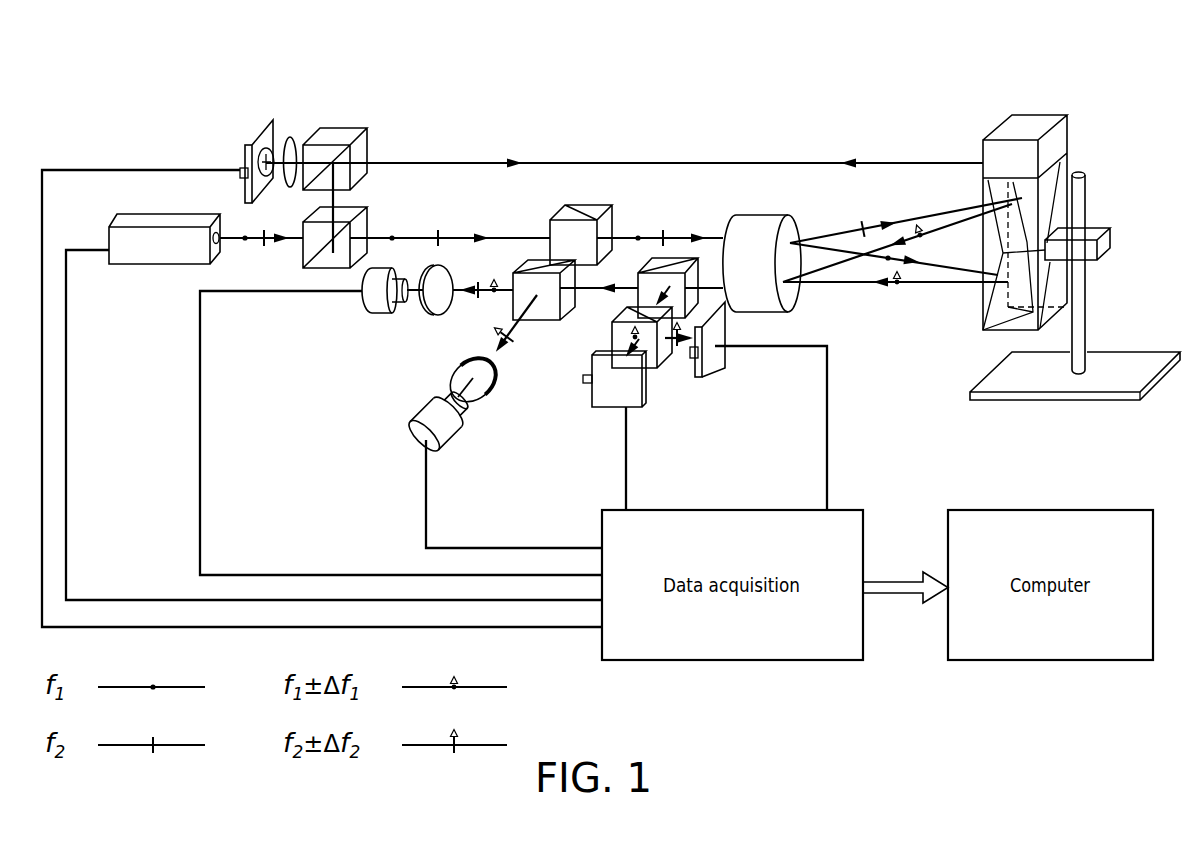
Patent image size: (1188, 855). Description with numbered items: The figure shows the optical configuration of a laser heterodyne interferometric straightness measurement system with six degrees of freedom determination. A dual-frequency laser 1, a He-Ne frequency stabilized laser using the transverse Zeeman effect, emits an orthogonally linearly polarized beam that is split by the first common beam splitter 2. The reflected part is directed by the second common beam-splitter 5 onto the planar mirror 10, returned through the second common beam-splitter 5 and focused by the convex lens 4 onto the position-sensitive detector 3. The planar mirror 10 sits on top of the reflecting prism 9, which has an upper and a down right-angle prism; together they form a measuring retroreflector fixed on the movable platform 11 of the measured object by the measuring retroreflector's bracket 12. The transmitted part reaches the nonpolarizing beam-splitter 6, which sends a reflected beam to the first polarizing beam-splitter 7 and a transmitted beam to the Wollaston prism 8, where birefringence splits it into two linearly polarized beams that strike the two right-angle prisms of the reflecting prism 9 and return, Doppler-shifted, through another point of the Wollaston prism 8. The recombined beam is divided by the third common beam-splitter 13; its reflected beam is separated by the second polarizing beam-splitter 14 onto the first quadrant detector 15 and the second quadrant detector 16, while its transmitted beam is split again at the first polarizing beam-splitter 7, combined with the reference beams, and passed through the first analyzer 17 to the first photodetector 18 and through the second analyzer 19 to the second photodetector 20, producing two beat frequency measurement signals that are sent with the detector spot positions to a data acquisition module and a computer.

The dual-frequency laser 1 is at (163, 252).
The first common beam splitter 2 is at (362, 223).
The position-sensitive detector 3 is at (260, 125).
The convex lens 4 is at (290, 137).
The second common beam-splitter 5 is at (340, 133).
The nonpolarizing beam-splitter 6 is at (592, 207).
The first polarizing beam-splitter 7 is at (532, 263).
The Wollaston prism 8 is at (759, 222).
The reflecting prism 9 is at (1008, 322).
The planar mirror 10 is at (1028, 123).
The movable platform 11 is at (1128, 358).
The measuring retroreflector's bracket 12 is at (1077, 340).
The third common beam-splitter 13 is at (673, 260).
The second polarizing beam-splitter 14 is at (663, 353).
The first quadrant detector 15 is at (717, 363).
The second quadrant detector 16 is at (635, 400).
The first analyzer 17 is at (435, 313).
The first photodetector 18 is at (375, 307).
The second analyzer 19 is at (487, 395).
The second photodetector 20 is at (423, 432).